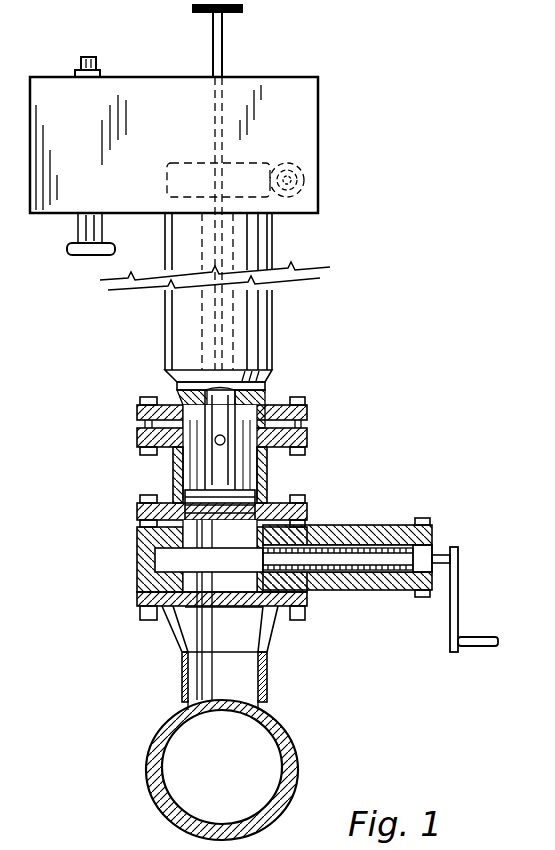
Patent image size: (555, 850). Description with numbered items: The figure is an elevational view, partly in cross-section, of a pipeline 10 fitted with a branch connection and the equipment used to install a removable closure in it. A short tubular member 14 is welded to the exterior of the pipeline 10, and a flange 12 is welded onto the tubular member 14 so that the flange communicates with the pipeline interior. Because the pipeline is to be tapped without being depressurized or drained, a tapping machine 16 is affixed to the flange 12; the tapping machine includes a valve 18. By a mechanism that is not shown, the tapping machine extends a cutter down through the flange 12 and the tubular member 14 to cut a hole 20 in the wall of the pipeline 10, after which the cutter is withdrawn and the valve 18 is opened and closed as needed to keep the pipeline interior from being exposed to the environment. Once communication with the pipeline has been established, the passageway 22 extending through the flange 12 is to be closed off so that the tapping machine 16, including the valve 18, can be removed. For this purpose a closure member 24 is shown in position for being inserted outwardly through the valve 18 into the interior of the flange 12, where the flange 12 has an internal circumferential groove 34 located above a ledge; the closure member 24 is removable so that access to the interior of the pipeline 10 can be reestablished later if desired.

The pipeline 10 is at (298, 765).
The flange 12 is at (182, 635).
The tubular member 14 is at (267, 684).
The tapping machine 16 is at (362, 407).
The valve 18 is at (353, 521).
The hole 20 is at (218, 700).
The passageway 22 is at (250, 632).
The closure member 24 is at (277, 487).
The internal circumferential groove 34 is at (140, 615).